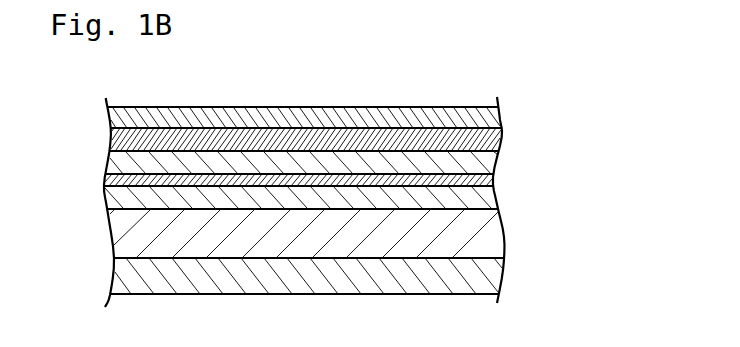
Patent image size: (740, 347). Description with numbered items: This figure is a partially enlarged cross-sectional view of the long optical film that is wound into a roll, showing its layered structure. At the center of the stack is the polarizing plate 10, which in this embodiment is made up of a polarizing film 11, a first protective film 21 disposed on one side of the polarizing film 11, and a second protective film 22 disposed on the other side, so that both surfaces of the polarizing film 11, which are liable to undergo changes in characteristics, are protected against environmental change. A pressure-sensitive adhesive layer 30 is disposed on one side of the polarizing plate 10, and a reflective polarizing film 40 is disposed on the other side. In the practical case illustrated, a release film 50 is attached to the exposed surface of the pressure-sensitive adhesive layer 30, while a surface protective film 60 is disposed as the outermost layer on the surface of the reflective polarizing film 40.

The polarizing plate 10 is at (378, 179).
The polarizing film 11 is at (490, 183).
The first protective film 21 is at (490, 163).
The second protective film 22 is at (350, 204).
The pressure-sensitive adhesive layer 30 is at (502, 141).
The reflective polarizing film 40 is at (493, 233).
The release film 50 is at (497, 118).
The surface protective film 60 is at (503, 277).